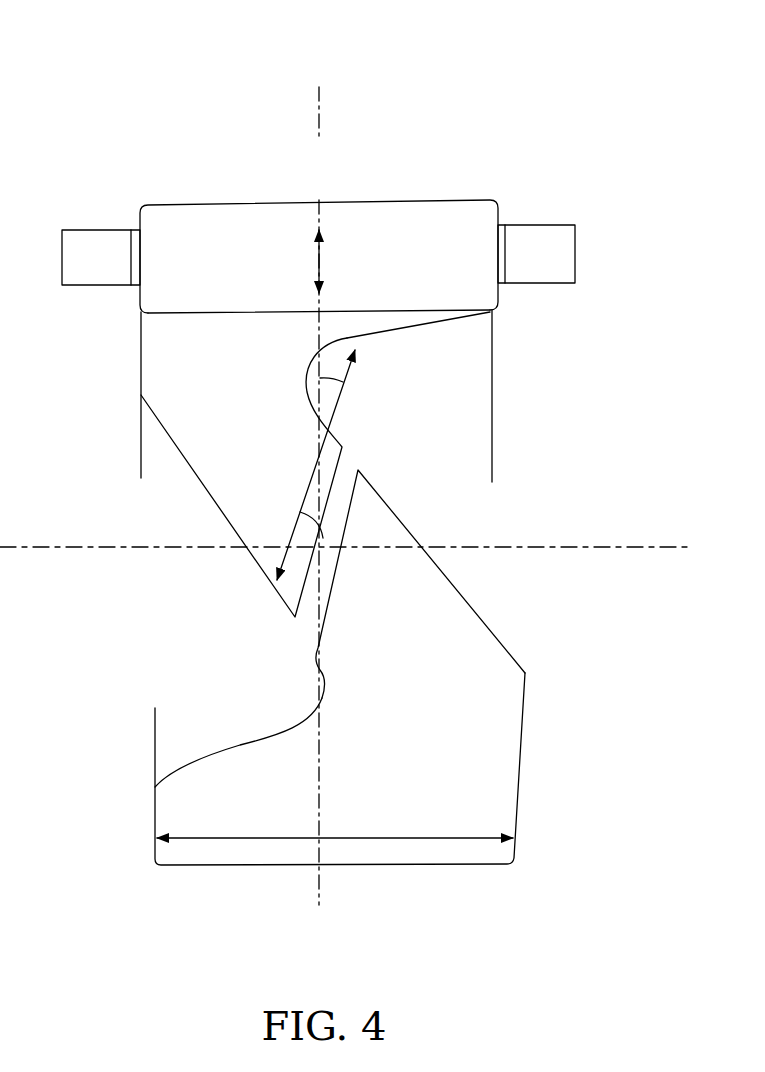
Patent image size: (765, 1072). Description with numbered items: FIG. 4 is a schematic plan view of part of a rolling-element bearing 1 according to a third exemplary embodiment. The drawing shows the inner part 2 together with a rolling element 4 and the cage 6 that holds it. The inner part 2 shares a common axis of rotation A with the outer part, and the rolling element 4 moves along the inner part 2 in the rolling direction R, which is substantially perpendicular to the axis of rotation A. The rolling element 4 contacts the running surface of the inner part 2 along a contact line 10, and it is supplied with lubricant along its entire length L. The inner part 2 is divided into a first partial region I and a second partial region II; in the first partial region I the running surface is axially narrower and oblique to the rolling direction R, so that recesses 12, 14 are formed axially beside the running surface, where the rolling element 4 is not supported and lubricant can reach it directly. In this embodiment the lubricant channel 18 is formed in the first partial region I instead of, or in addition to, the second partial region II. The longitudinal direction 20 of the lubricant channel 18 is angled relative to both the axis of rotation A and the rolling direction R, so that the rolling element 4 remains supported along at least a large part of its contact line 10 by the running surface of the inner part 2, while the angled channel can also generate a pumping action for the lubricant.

The rolling-element bearing 1 is at (512, 137).
The inner part 2 is at (254, 848).
The rolling element 4 is at (424, 218).
The cage 6 is at (555, 253).
The line 10 is at (197, 312).
The recess 12 is at (398, 402).
The recess 14 is at (263, 661).
The lubricant channel 18 is at (313, 598).
The longitudinal direction 20 is at (302, 512).
The first partial region I is at (230, 442).
The second partial region II is at (463, 849).
The rolling direction R is at (319, 262).
The length L is at (318, 496).
The axis of rotation A is at (359, 546).